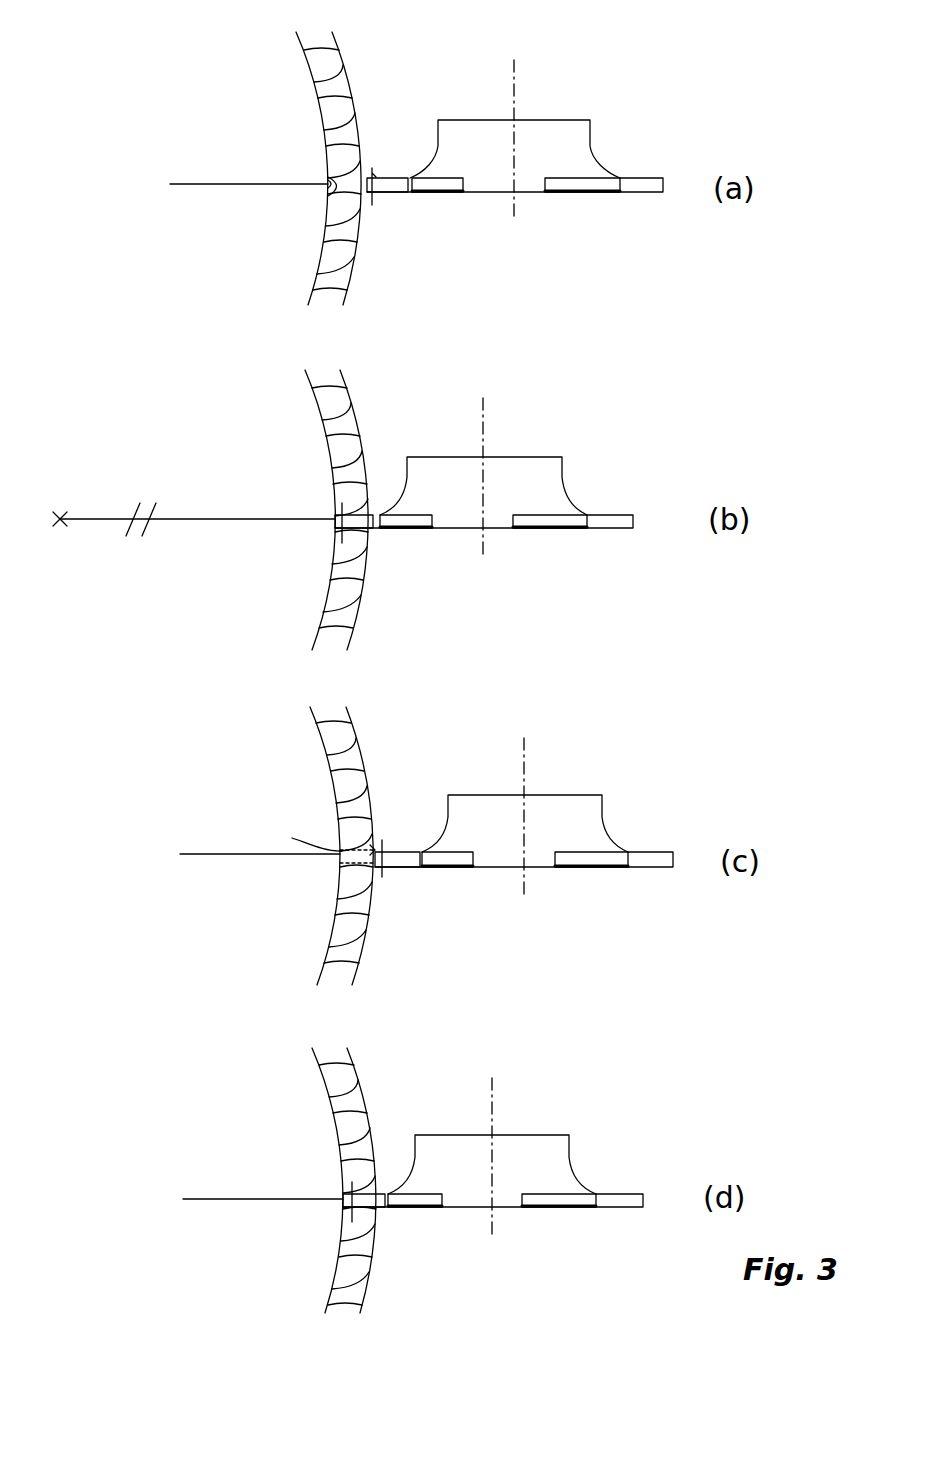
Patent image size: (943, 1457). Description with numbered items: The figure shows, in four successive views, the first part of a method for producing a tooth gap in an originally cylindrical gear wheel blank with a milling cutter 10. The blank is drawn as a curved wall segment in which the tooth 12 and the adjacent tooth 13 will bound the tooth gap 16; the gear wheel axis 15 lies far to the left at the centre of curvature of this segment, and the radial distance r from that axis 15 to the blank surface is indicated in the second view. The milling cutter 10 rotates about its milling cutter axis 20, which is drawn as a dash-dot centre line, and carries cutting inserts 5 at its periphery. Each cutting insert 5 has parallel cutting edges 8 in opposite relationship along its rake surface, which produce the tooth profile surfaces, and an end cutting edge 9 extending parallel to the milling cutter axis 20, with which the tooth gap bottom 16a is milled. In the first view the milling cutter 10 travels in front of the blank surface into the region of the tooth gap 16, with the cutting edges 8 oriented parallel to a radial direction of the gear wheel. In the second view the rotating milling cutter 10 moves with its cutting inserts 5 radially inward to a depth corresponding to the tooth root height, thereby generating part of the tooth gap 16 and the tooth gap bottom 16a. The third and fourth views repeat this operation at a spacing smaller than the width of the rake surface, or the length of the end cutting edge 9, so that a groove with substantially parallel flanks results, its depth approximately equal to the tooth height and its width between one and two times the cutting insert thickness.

The cutting insert 5 is at (650, 190).
The cutting edges 8 is at (412, 178).
The end cutting edge 9 is at (372, 843).
The milling cutter 10 is at (608, 97).
The tooth 12 is at (350, 155).
The tooth 13 is at (350, 212).
The axis of the gear wheel 15 is at (71, 508).
The tooth gap 16 is at (352, 190).
The tooth gap bottom 16a is at (342, 197).
The milling cutter axis 20 is at (515, 208).
The radius r is at (223, 519).